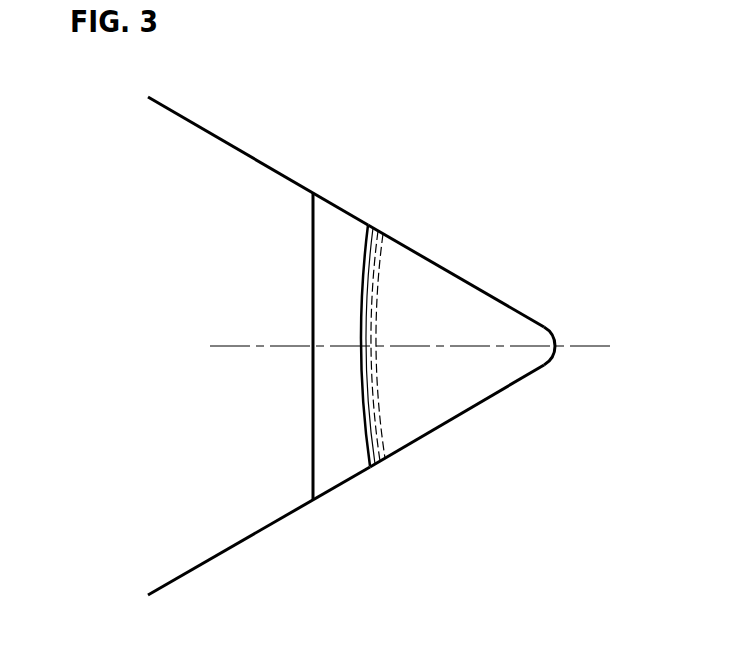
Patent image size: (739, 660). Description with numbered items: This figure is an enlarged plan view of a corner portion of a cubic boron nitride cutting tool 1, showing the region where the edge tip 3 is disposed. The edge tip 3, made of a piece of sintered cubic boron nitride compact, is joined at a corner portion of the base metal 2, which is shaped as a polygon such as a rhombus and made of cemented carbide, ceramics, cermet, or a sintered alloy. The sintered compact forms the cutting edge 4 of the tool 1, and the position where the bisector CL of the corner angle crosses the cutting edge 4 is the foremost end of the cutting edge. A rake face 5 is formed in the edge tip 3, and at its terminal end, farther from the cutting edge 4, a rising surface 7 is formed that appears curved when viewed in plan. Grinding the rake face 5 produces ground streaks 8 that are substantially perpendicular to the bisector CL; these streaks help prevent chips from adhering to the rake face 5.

The cubic boron nitride cutting tool 1 is at (319, 157).
The base metal 2 is at (262, 500).
The edge tip 3 is at (447, 398).
The cutting edge 4 is at (541, 372).
The rake face 5 is at (508, 323).
The rising surface 7 is at (366, 266).
The ground streaks 8 is at (428, 302).